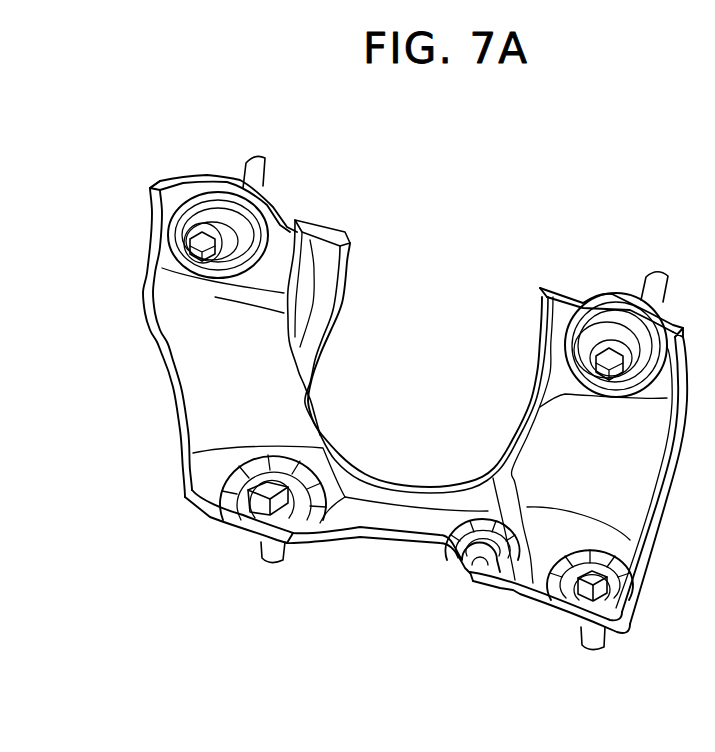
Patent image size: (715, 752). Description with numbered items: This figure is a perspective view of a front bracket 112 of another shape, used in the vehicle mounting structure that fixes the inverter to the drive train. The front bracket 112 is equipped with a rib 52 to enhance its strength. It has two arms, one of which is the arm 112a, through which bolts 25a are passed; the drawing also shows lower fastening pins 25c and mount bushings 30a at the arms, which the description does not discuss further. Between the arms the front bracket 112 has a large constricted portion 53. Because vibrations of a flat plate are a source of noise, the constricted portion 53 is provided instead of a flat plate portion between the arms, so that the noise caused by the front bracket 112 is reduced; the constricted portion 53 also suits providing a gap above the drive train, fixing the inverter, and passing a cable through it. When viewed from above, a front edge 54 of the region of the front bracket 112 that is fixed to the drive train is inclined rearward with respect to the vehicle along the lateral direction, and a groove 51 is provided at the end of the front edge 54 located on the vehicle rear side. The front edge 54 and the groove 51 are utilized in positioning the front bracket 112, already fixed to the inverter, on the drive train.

The front bracket 112 is at (150, 165).
The arm 112a is at (183, 298).
The bolt 25a is at (258, 168).
The rubber mount bushing 30a is at (228, 232).
The constricted portion 53 is at (424, 371).
The rib 52 is at (185, 453).
The front edge 54 is at (373, 543).
The groove 51 is at (460, 569).
The lower bolt pin 25c is at (273, 563).